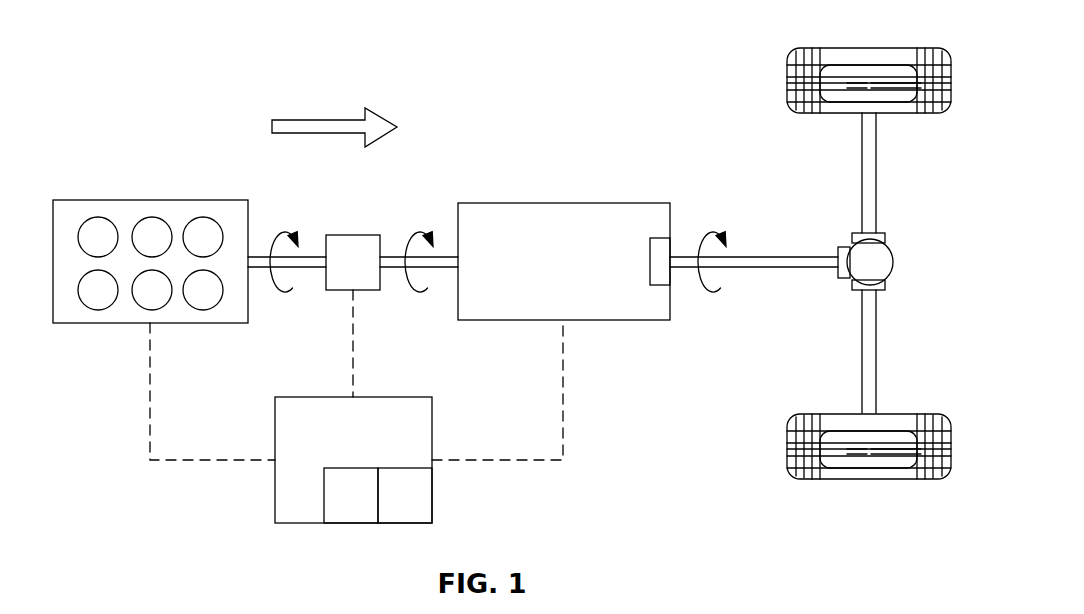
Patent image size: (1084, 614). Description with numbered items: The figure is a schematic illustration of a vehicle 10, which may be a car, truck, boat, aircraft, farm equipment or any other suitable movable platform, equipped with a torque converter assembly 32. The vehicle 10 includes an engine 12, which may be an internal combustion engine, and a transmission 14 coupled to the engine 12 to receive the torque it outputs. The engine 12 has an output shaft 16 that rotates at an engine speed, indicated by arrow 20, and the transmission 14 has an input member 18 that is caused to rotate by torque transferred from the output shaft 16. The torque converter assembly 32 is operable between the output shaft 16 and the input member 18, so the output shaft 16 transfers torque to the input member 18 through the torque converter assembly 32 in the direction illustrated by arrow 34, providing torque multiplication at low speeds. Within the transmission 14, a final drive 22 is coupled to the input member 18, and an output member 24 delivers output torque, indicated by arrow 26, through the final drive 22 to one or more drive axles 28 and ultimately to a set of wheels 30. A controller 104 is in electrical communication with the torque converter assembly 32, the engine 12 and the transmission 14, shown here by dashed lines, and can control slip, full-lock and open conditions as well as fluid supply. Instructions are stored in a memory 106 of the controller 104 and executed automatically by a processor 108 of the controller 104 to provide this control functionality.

The vehicle 10 is at (141, 31).
The engine 12 is at (87, 200).
The transmission 14 is at (565, 203).
The output shaft 16 is at (318, 268).
The input member 18 is at (452, 268).
The arrow indicating engine speed 20 is at (295, 236).
The final drive 22 is at (650, 258).
The output member 24 is at (778, 268).
The arrow indicating output torque 26 is at (724, 234).
The drive axles 28 is at (878, 180).
The wheels 30 is at (788, 82).
The torque converter assembly 32 is at (353, 235).
The arrow indicating torque transfer direction 34 is at (315, 118).
The controller 104 is at (275, 502).
The memory 106 is at (334, 509).
The processor 108 is at (388, 509).